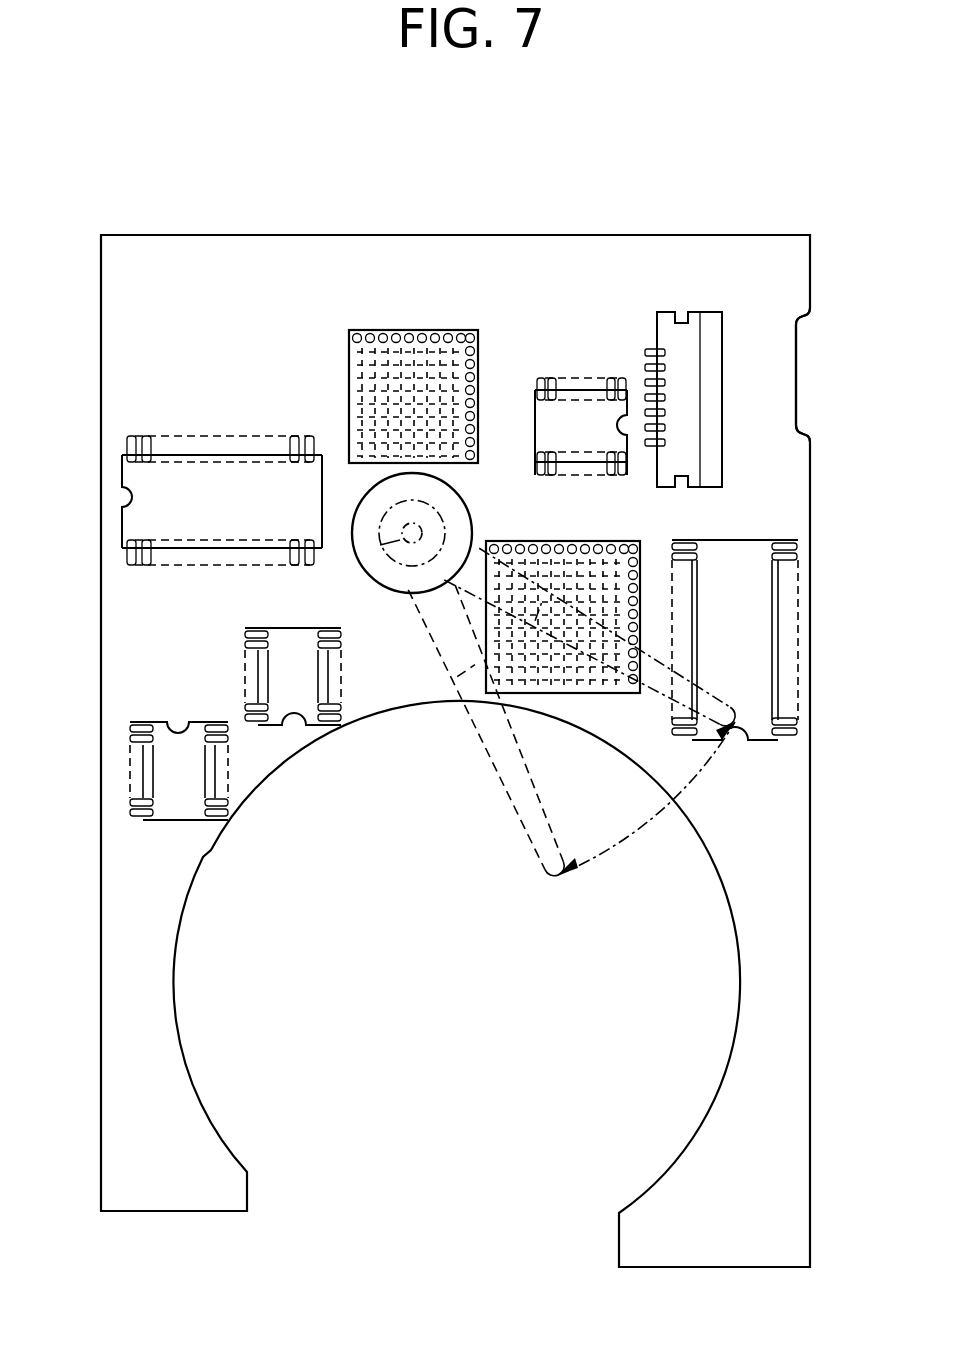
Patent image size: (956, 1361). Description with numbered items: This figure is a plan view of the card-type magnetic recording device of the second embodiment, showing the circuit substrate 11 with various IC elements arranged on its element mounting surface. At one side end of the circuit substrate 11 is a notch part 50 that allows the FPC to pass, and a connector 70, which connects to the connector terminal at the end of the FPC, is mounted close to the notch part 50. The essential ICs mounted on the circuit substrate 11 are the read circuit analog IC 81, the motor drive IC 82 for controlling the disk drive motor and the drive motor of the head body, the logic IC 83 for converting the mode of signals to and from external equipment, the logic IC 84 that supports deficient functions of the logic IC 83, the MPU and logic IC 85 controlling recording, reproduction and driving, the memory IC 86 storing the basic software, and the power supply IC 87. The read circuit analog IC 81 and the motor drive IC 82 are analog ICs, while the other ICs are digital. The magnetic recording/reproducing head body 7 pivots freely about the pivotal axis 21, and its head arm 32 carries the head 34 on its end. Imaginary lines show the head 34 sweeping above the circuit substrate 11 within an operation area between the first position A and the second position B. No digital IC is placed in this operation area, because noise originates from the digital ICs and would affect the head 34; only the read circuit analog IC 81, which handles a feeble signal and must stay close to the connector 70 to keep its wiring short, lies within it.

The circuit substrate 11 is at (490, 235).
The notch part 50 is at (797, 400).
The connector 70 is at (722, 340).
The logic IC 83 is at (397, 330).
The MPU and logic IC 85 is at (533, 543).
The memory IC 86 is at (565, 378).
The motor drive IC 82 is at (121, 500).
The logic IC 84 is at (245, 650).
The power supply IC 87 is at (130, 758).
The read circuit analog IC 81 is at (798, 590).
The pivotal axis 21 is at (386, 570).
The head arm 32 is at (496, 765).
The magnetic recording/reproducing head body 7 is at (665, 650).
The magnetic recording/reproducing head 34 is at (543, 855).
The first position A is at (748, 726).
The second position B is at (565, 888).